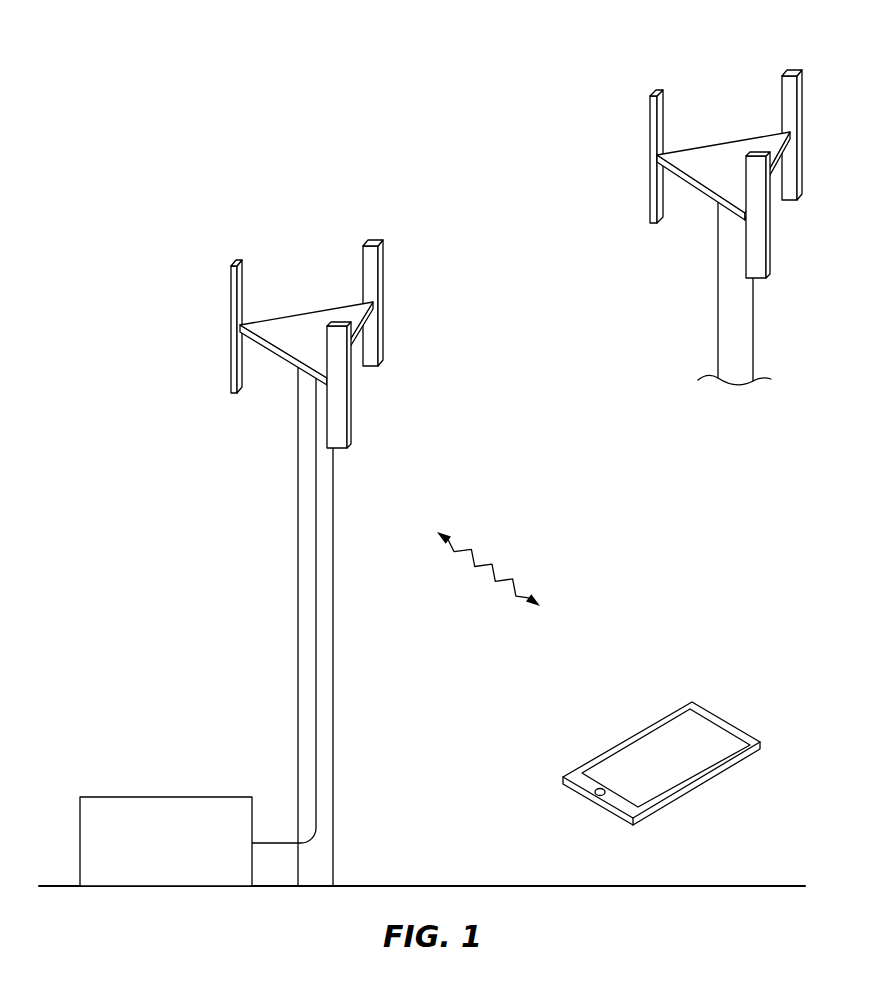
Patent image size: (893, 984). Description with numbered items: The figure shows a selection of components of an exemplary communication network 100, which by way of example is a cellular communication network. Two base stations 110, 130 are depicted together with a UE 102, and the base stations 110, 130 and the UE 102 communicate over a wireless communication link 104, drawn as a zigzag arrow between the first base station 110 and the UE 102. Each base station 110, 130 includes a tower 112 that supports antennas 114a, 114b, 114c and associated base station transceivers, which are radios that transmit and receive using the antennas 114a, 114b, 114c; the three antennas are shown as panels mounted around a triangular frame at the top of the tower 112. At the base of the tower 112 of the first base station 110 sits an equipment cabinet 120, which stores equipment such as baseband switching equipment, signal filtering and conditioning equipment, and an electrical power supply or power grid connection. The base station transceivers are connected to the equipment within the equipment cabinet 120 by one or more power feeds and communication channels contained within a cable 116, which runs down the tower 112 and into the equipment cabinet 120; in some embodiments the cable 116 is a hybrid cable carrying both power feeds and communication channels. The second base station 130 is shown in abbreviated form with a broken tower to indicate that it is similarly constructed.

The communication network 100 is at (166, 70).
The UE 102 is at (660, 715).
The wireless communication link 104 is at (482, 561).
The base station 110 is at (300, 311).
The tower 112 is at (334, 705).
The antenna 114a is at (351, 419).
The antenna 114b is at (383, 290).
The antenna 114c is at (231, 300).
The cable 116 is at (318, 648).
The equipment cabinet 120 is at (80, 838).
The base station 130 is at (710, 147).